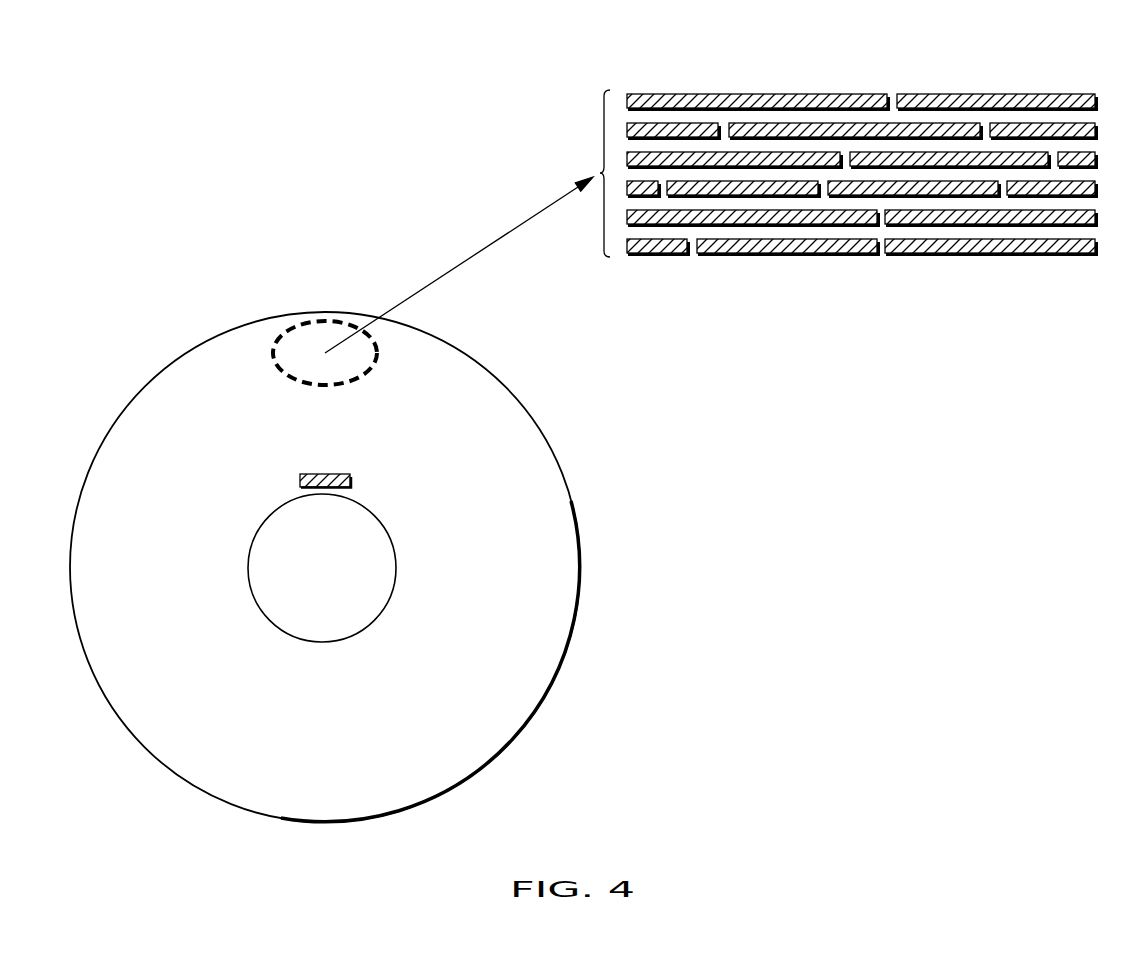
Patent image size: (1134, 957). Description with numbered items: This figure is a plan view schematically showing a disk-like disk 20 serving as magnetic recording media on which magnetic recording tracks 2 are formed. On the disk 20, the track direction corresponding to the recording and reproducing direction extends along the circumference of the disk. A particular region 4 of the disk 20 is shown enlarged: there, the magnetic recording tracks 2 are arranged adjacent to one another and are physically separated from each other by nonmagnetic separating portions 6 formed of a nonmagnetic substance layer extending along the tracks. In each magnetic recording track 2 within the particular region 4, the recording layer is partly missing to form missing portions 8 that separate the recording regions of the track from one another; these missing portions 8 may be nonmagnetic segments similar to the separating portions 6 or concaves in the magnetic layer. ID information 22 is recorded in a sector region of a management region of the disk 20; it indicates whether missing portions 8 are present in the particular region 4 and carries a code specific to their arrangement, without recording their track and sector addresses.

The magnetic recording track 2 is at (1005, 256).
The particular region 4 is at (327, 320).
The nonmagnetic separating portion 6 is at (746, 121).
The missing portion 8 is at (890, 100).
The disk 20 is at (138, 395).
The ID information 22 is at (351, 480).